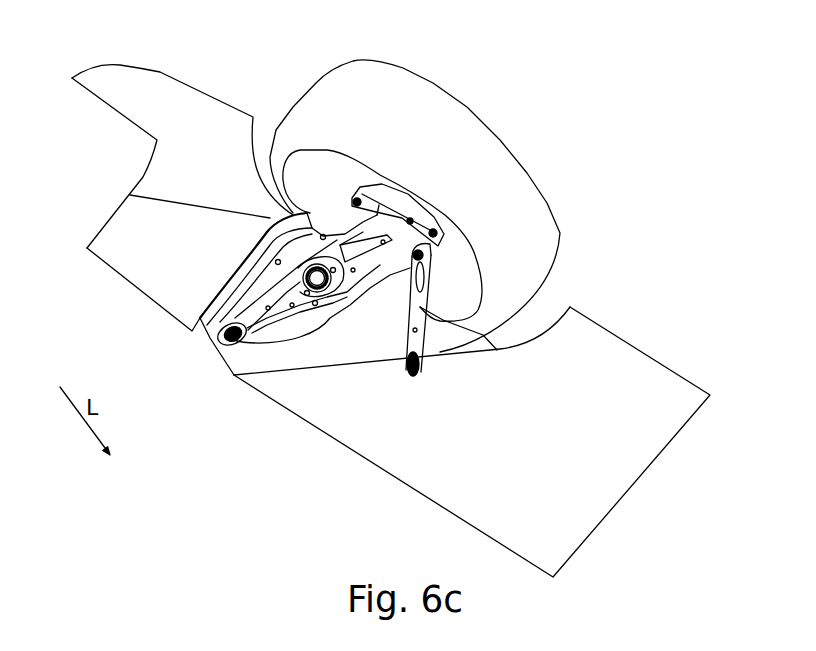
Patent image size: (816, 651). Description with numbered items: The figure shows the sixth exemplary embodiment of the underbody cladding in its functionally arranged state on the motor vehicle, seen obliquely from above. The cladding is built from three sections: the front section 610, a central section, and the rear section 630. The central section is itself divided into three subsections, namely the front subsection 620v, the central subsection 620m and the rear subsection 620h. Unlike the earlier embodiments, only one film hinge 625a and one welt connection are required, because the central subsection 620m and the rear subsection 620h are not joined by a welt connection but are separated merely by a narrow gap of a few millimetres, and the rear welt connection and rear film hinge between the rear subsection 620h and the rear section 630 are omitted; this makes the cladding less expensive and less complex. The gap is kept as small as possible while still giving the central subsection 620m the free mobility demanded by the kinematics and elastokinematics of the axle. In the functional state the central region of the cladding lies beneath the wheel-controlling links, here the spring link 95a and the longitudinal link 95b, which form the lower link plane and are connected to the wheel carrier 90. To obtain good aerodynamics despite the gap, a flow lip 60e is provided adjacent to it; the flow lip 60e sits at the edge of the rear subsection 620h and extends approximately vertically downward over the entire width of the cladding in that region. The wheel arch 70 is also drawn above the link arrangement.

The rear section 630 is at (227, 165).
The rear subsection 620h is at (210, 268).
The front subsection 620v is at (383, 355).
The central subsection 620m is at (214, 348).
The film hinge 625a is at (287, 374).
The front section 610 is at (557, 461).
The wheel arch 70 is at (480, 193).
The wheel carrier 90 is at (403, 190).
The spring link 95a is at (343, 227).
The longitudinal link 95b is at (427, 300).
The flow lip 60e is at (323, 203).